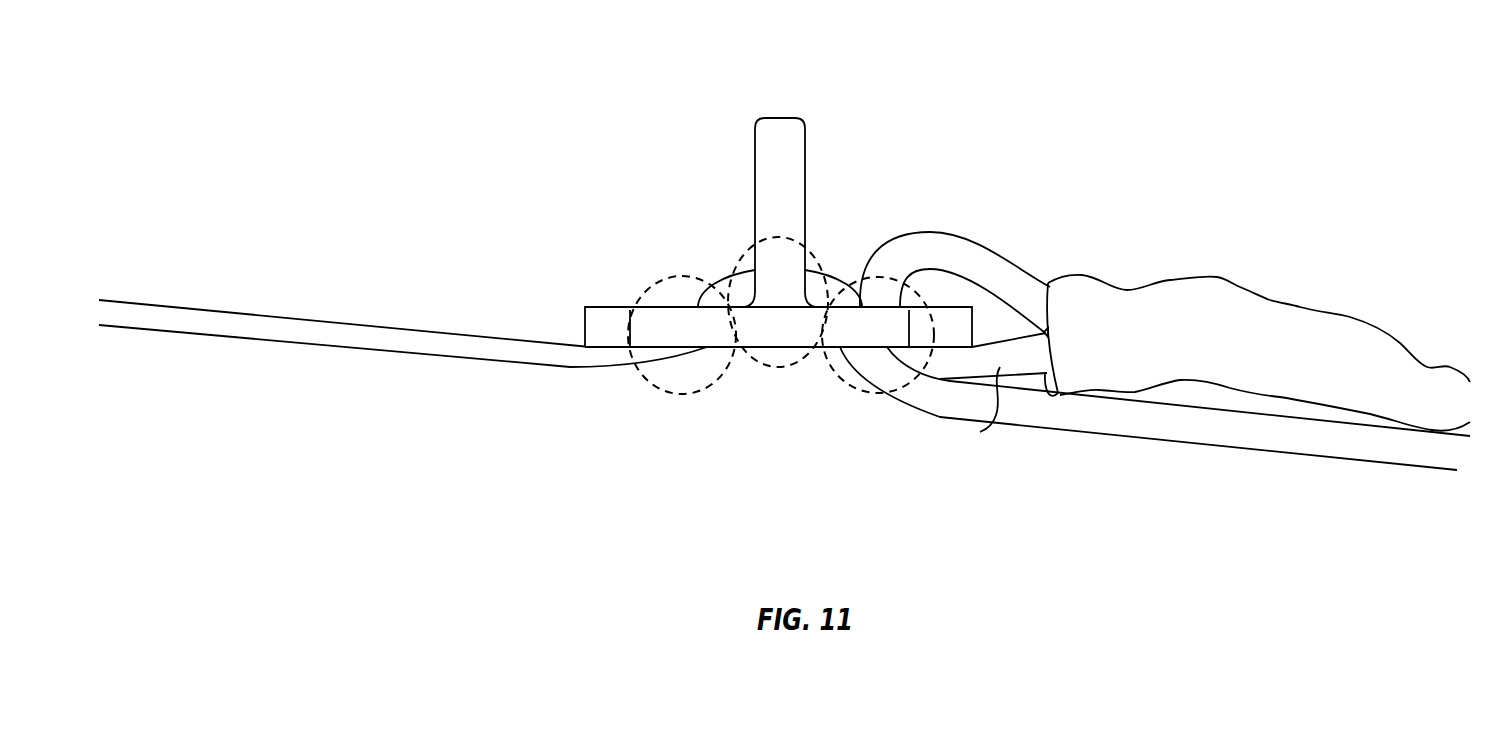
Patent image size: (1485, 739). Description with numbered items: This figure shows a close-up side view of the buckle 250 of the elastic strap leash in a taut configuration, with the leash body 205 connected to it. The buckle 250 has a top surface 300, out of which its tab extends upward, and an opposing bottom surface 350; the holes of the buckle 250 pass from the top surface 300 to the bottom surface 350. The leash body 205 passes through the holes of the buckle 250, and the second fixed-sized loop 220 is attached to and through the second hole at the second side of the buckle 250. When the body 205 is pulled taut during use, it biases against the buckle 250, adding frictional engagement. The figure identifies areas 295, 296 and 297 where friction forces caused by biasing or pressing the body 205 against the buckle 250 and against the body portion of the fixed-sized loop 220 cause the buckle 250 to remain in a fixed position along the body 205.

The leash body 205 is at (447, 348).
The fixed-sized loop 220 is at (968, 232).
The buckle 250 is at (762, 188).
The friction area 295 is at (852, 396).
The friction area 296 is at (697, 400).
The friction area 297 is at (778, 370).
The top surface 300 is at (603, 306).
The bottom surface 350 is at (605, 348).